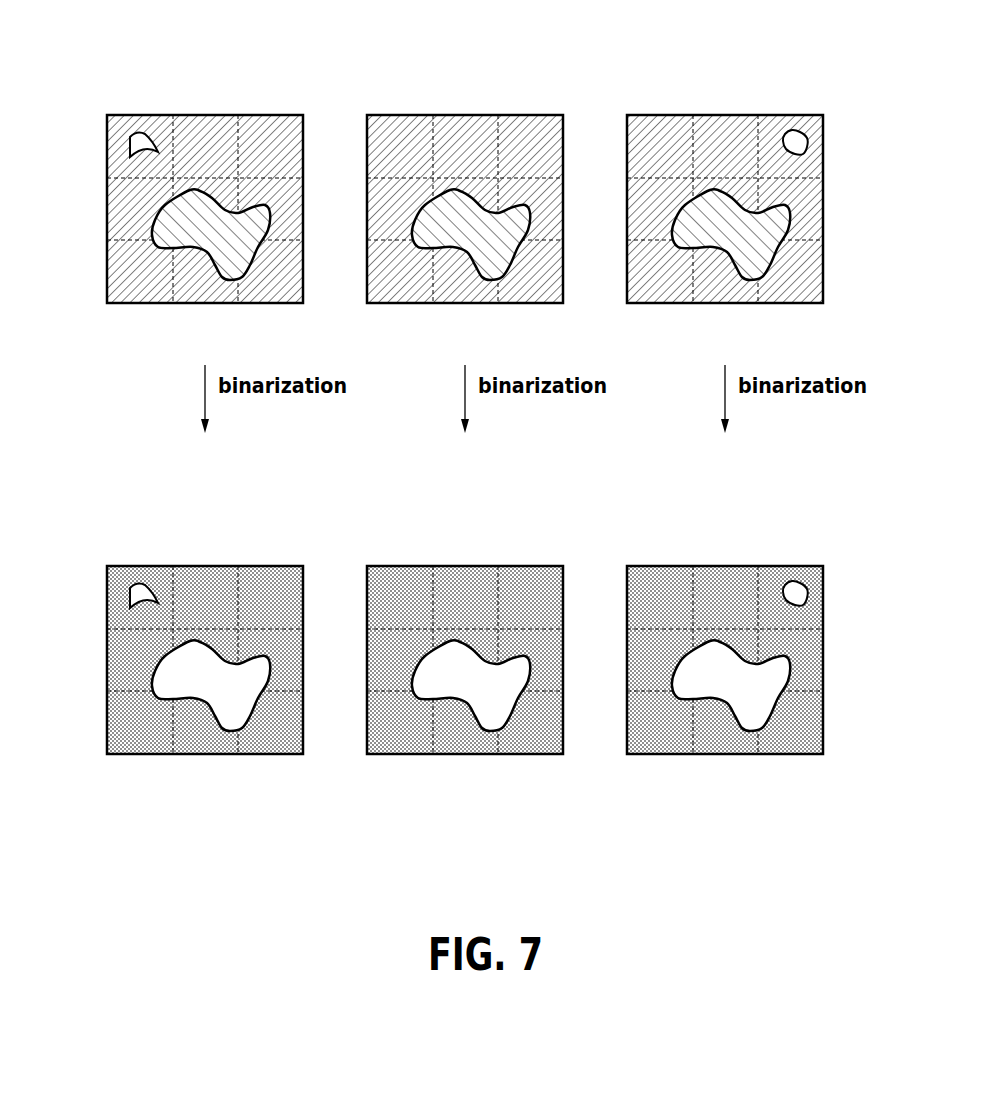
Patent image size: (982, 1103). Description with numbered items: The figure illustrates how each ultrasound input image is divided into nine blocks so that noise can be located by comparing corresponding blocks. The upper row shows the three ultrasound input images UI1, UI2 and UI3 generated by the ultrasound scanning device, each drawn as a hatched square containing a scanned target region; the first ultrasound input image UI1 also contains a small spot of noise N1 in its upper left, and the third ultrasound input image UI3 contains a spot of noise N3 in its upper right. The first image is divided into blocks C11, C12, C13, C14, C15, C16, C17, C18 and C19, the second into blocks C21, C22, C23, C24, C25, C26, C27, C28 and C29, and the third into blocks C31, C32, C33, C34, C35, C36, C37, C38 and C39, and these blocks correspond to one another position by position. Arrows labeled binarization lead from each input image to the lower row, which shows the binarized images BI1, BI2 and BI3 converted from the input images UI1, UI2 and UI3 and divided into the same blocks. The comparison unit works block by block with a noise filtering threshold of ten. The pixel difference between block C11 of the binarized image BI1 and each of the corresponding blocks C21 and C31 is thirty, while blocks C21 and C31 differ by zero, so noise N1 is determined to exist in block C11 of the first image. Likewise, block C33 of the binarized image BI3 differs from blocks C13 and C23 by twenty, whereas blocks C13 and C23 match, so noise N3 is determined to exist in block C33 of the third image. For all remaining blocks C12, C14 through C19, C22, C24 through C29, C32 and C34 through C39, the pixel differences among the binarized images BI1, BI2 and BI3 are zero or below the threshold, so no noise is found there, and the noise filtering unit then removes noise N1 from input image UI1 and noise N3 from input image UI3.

The first ultrasound input image UI1 is at (244, 75).
The second ultrasound input image UI2 is at (504, 75).
The third ultrasound input image UI3 is at (764, 75).
The first binarized image BI1 is at (244, 526).
The second binarized image BI2 is at (504, 526).
The third binarized image BI3 is at (764, 526).
The noise N1 is at (130, 142).
The noise N3 is at (815, 141).
The block C11 is at (137, 130).
The block C12 is at (203, 140).
The block C13 is at (275, 133).
The block C14 is at (115, 218).
The block C15 is at (190, 185).
The block C16 is at (285, 215).
The block C17 is at (138, 293).
The block C18 is at (203, 290).
The block C19 is at (275, 288).
The block C21 is at (397, 130).
The block C22 is at (463, 140).
The block C23 is at (535, 133).
The block C24 is at (383, 207).
The block C25 is at (483, 188).
The block C26 is at (553, 217).
The block C27 is at (398, 293).
The block C28 is at (463, 290).
The block C29 is at (535, 288).
The block C31 is at (657, 130).
The block C32 is at (723, 140).
The block C33 is at (802, 114).
The block C34 is at (643, 207).
The block C35 is at (757, 183).
The block C36 is at (813, 217).
The block C37 is at (658, 293).
The block C38 is at (723, 290).
The block C39 is at (795, 288).